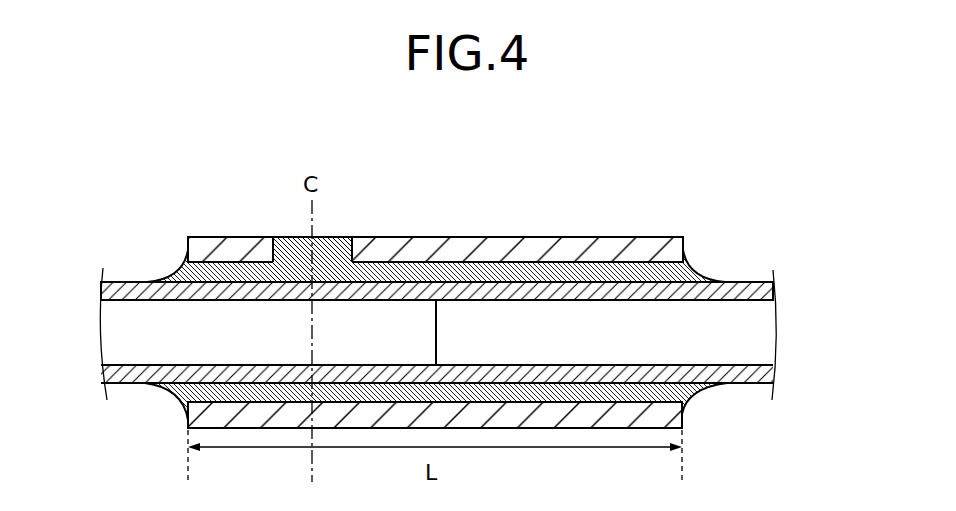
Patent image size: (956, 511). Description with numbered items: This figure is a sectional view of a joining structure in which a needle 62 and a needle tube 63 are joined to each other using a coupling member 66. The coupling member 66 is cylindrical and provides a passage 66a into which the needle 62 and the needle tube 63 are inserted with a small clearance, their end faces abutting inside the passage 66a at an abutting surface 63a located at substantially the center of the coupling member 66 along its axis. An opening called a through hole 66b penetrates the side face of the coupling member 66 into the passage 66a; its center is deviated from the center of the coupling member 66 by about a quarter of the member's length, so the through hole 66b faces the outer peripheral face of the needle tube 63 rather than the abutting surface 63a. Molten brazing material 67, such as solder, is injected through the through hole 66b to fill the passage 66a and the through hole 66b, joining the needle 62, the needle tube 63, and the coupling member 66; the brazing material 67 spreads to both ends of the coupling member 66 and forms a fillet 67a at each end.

The needle 62 is at (746, 290).
The needle tube 63 is at (114, 288).
The abutting surface 63a is at (436, 318).
The coupling member 66 is at (582, 262).
The passage 66a is at (198, 392).
The through hole 66b is at (351, 226).
The brazing material 67 is at (290, 240).
The fillet 67a is at (178, 266).